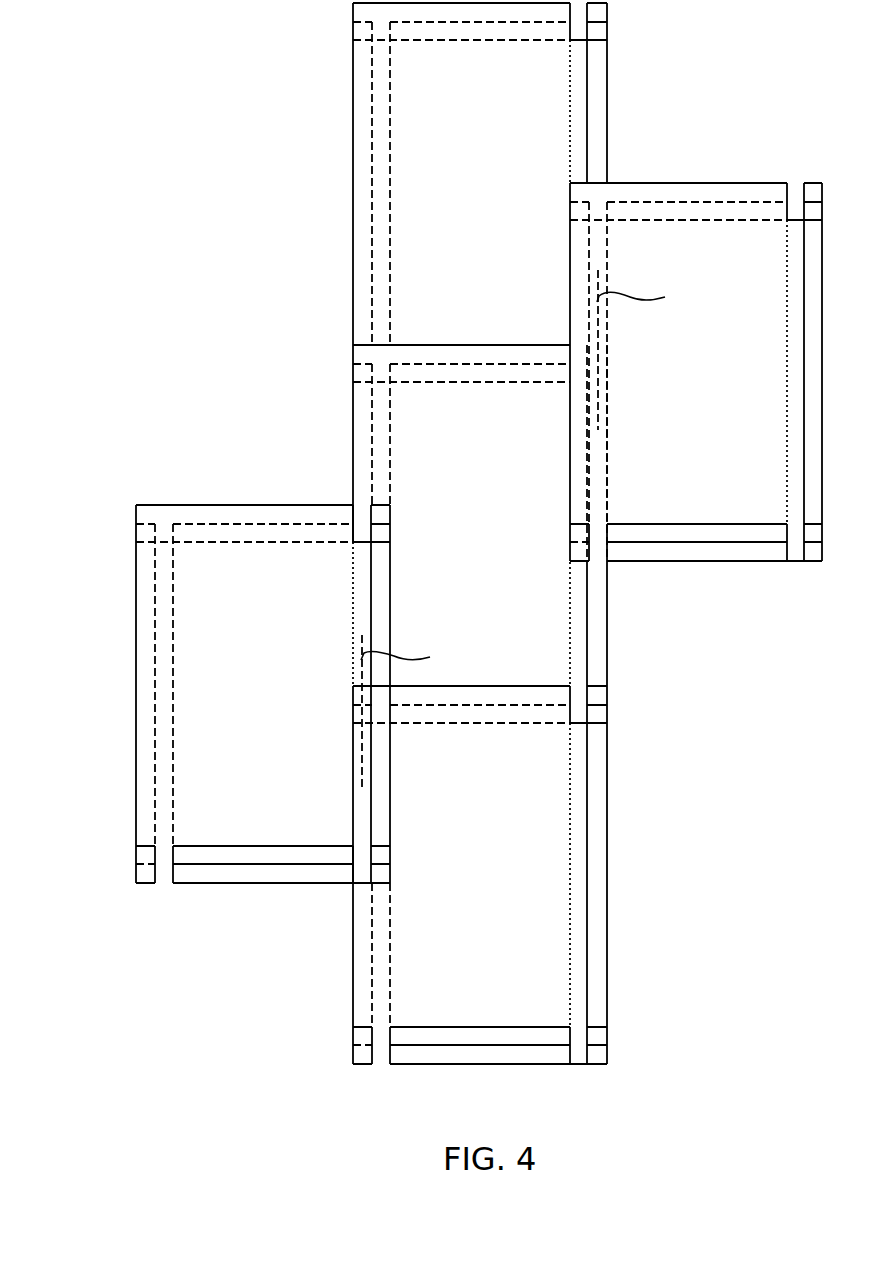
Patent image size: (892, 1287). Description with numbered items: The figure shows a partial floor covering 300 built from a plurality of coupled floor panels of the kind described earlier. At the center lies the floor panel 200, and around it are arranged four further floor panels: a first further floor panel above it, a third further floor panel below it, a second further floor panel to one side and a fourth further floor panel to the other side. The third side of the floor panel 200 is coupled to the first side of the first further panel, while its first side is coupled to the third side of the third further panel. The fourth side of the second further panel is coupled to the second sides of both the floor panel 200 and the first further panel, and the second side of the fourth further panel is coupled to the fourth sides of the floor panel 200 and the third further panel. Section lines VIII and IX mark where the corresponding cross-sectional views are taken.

The roof tile assembly 300 is at (106, 61).
The floor panel 200 is at (480, 515).